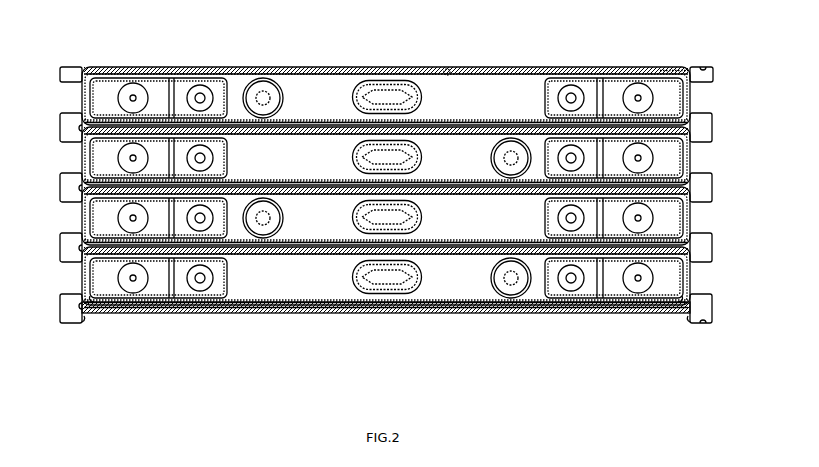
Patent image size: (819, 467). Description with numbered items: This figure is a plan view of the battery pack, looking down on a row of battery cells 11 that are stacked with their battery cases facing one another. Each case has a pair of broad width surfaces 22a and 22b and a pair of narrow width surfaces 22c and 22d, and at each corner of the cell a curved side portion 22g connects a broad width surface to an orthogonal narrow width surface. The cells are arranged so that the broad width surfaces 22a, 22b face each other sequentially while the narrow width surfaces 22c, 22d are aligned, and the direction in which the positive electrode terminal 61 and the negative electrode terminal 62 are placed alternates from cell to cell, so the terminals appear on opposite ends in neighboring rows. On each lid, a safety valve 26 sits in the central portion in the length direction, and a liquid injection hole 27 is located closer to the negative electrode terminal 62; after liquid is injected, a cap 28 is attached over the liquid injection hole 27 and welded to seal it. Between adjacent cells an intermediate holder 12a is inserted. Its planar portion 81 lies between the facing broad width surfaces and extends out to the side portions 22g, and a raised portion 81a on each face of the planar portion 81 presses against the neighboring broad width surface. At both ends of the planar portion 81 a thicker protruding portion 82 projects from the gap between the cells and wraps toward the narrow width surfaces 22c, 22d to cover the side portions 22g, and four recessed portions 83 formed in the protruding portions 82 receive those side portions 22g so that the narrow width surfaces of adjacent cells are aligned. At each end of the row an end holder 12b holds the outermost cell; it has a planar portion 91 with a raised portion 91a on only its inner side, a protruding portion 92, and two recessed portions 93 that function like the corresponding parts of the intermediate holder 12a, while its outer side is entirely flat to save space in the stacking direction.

The battery cell 11 is at (473, 147).
The intermediate holder 12a is at (717, 127).
The end holder 12b is at (717, 74).
The broad width surface 22a is at (342, 69).
The broad width surface 22b is at (303, 125).
The narrow width surface 22c is at (80, 156).
The narrow width surface 22d is at (80, 96).
The side portion 22g is at (80, 128).
The safety valve 26 is at (386, 293).
The liquid injection hole 27 is at (498, 298).
The cap 28 is at (520, 299).
The positive electrode terminal 61 is at (203, 146).
The negative electrode terminal 62 is at (200, 84).
The planar portion 81 is at (280, 313).
The raised portion 81a is at (250, 313).
The protruding portion 82 is at (67, 323).
The recessed portion 83 is at (85, 320).
The planar portion 91 is at (390, 65).
The raised portion 91a is at (446, 70).
The protruding portion 92 is at (70, 63).
The recessed portion 93 is at (690, 67).